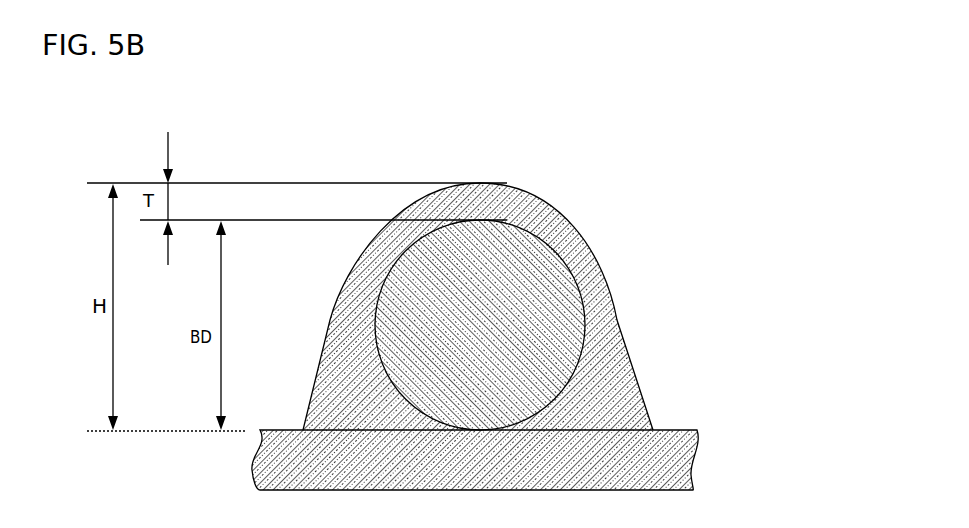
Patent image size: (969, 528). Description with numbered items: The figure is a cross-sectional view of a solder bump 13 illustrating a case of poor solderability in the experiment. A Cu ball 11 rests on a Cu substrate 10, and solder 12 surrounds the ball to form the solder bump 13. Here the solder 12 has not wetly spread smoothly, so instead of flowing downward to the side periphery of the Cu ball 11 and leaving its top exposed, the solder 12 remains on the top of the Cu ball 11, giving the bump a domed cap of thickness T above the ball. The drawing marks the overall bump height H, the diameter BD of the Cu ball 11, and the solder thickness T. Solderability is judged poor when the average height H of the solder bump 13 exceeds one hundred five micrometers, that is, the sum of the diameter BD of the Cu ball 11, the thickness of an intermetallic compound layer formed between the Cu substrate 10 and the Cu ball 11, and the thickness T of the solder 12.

The Cu substrate 10 is at (698, 455).
The Cu ball 11 is at (585, 325).
The solder 12 is at (613, 268).
The solder bump 13 is at (520, 305).